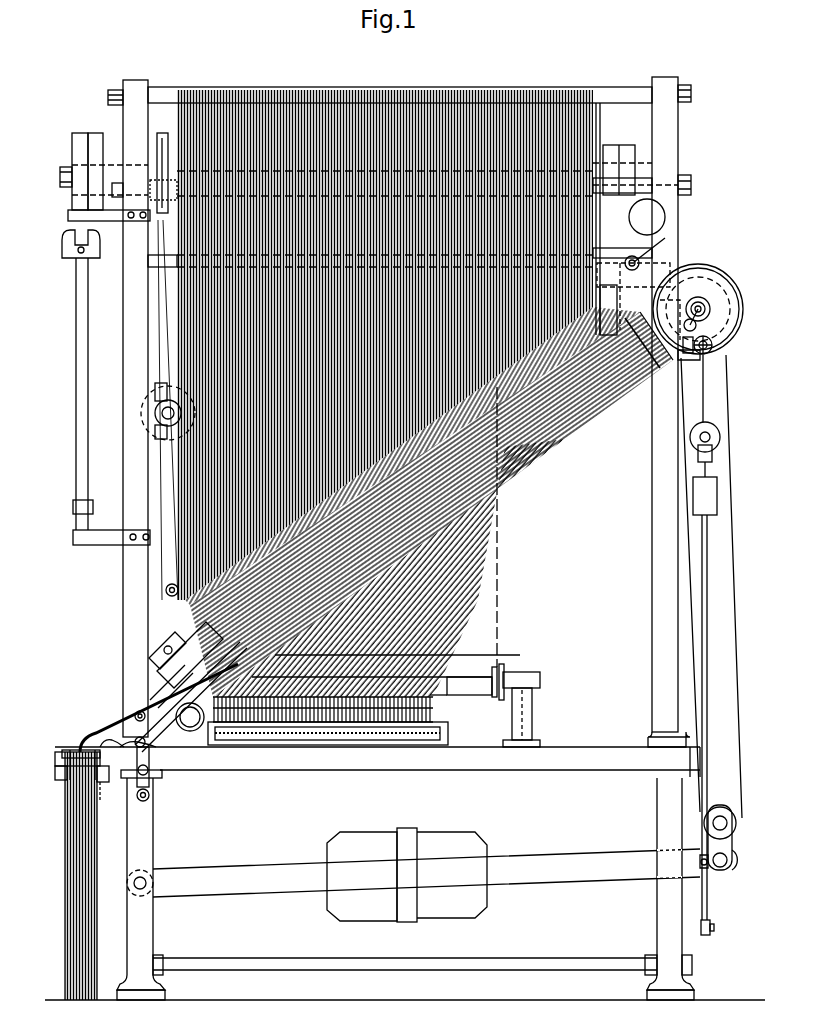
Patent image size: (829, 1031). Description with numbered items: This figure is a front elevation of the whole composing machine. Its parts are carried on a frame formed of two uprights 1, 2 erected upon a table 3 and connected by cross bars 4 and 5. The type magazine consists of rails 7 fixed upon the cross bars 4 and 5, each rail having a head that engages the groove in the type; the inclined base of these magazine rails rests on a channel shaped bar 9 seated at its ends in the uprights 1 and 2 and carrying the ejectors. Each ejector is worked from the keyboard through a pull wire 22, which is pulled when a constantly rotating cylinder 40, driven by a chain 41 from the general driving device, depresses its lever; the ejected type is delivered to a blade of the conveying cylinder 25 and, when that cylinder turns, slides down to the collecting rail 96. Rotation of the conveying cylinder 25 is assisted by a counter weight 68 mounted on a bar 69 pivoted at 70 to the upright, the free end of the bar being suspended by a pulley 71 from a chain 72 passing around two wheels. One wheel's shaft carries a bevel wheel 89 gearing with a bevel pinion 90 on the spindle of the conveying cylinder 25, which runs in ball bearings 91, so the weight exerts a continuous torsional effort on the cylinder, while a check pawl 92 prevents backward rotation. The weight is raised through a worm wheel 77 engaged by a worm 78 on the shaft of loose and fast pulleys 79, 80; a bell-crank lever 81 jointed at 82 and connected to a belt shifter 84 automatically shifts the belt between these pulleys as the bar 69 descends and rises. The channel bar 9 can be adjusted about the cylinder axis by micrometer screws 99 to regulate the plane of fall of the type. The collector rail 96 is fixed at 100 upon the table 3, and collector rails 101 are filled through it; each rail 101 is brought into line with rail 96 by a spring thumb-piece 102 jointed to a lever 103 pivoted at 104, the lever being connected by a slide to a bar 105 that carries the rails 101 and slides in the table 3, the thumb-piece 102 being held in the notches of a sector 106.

The upright 1 is at (135, 408).
The upright 2 is at (641, 412).
The table 3 is at (377, 738).
The cross bar 4 is at (605, 95).
The cross bar 5 is at (637, 183).
The magazine rail 7 is at (538, 93).
The channel shaped bar 9 is at (191, 679).
The pull wire 22 is at (463, 636).
The conveying cylinder 25 is at (536, 458).
The cylinder 40 is at (466, 686).
The chain 41 is at (498, 589).
The counter weight 68 is at (437, 834).
The bar 69 is at (265, 872).
The pivot 70 is at (127, 883).
The pulley 71 is at (738, 826).
The chain 72 is at (722, 645).
The worm wheel 77 is at (722, 292).
The worm 78 is at (712, 345).
The loose pulley 79 is at (612, 425).
The fast pulley 80 is at (614, 385).
The bell-crank lever 81 is at (636, 262).
The joint 82 is at (682, 356).
The belt shifter 84 is at (596, 410).
The bevel wheel 89 is at (712, 280).
The bevel pinion 90 is at (675, 368).
The ball bearings 91 is at (160, 697).
The check pawl 92 is at (163, 640).
The collecting rail 96 is at (82, 735).
The micrometer screw 99 is at (174, 588).
The fixing point 100 is at (82, 752).
The collector rail 101 is at (66, 818).
The spring thumb-piece 102 is at (125, 740).
The lever 103 is at (158, 788).
The pivot 104 is at (150, 798).
The bar 105 is at (105, 790).
The sector 106 is at (100, 740).